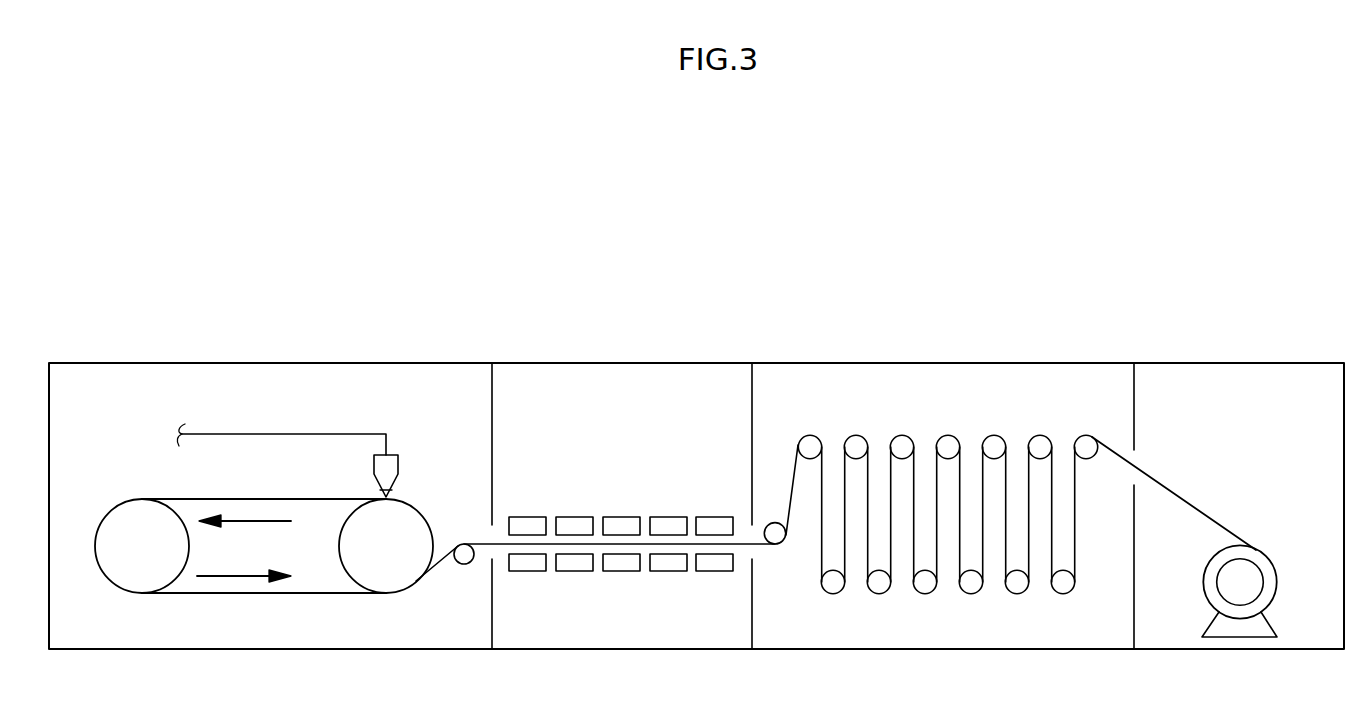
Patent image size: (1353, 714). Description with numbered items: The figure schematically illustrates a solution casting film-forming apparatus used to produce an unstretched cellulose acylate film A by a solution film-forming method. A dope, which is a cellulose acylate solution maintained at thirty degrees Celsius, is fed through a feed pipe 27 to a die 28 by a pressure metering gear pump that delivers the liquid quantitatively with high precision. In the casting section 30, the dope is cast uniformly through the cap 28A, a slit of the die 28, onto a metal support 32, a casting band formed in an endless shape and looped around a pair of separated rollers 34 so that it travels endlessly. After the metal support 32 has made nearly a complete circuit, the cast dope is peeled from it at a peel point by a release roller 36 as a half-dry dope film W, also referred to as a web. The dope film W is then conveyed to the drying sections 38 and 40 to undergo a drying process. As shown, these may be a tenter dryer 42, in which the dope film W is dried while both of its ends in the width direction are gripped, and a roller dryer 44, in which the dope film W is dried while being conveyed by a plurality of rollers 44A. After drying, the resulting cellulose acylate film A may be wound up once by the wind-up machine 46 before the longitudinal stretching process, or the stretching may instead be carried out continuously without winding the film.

The casting section 30 is at (261, 361).
The feed pipe 27 is at (302, 431).
The die 28 is at (390, 453).
The cap 28A is at (384, 497).
The metal support 32 is at (250, 597).
The roller for a metal support 34 is at (139, 580).
The release roller 36 is at (464, 564).
The dope film W is at (445, 550).
The drying section 38 is at (639, 357).
The tenter dryer 42 is at (622, 588).
The drying section 40 is at (1026, 356).
The roller dryer 44 is at (930, 542).
The rollers 44A is at (1041, 438).
The cellulose acylate film A is at (1188, 500).
The wind-up machine 46 is at (1248, 575).